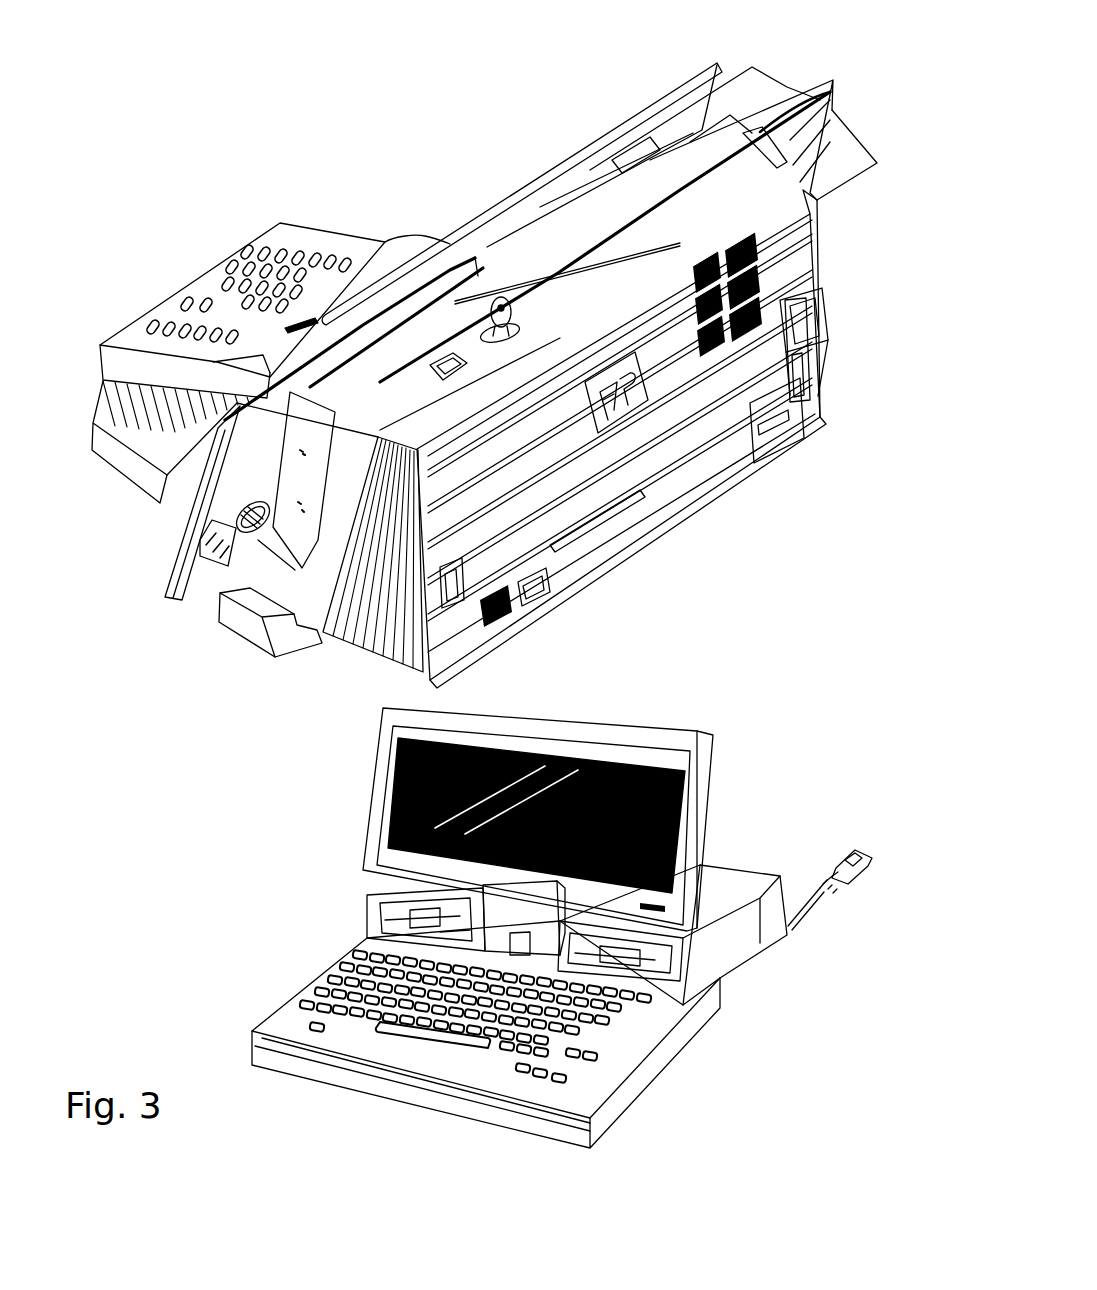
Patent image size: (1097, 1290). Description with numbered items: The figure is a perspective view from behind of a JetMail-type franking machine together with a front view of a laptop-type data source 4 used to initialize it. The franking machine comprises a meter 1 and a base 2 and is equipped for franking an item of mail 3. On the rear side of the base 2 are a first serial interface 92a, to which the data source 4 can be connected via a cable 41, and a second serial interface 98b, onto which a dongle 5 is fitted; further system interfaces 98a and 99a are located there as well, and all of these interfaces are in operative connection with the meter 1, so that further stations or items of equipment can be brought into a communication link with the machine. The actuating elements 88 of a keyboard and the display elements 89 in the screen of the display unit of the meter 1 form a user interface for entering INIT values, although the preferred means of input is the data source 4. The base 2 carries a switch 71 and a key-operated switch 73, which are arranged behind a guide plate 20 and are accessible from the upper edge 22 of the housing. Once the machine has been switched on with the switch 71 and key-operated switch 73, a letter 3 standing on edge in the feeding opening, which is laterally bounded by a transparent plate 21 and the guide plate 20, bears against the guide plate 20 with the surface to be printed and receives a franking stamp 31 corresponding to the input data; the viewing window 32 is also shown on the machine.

The meter 1 is at (100, 345).
The base 2 is at (620, 552).
The item of mail 3 is at (165, 578).
The data source 4 is at (318, 831).
The dongle 5 is at (823, 287).
The guide plate 20 is at (727, 133).
The transparent plate 21 is at (717, 62).
The upper edge 22 is at (743, 180).
The franking stamp 31 is at (200, 570).
The lens / viewing window 32 is at (240, 535).
The cable 41 is at (808, 891).
The switch 71 is at (455, 350).
The key-operated switch 73 is at (513, 293).
The actuating elements 88 is at (244, 278).
The display elements 89 is at (282, 328).
The first serial interface 92a is at (533, 593).
The system interface 98a is at (800, 363).
The second serial interface 98b is at (797, 337).
The system interface 99a is at (455, 605).